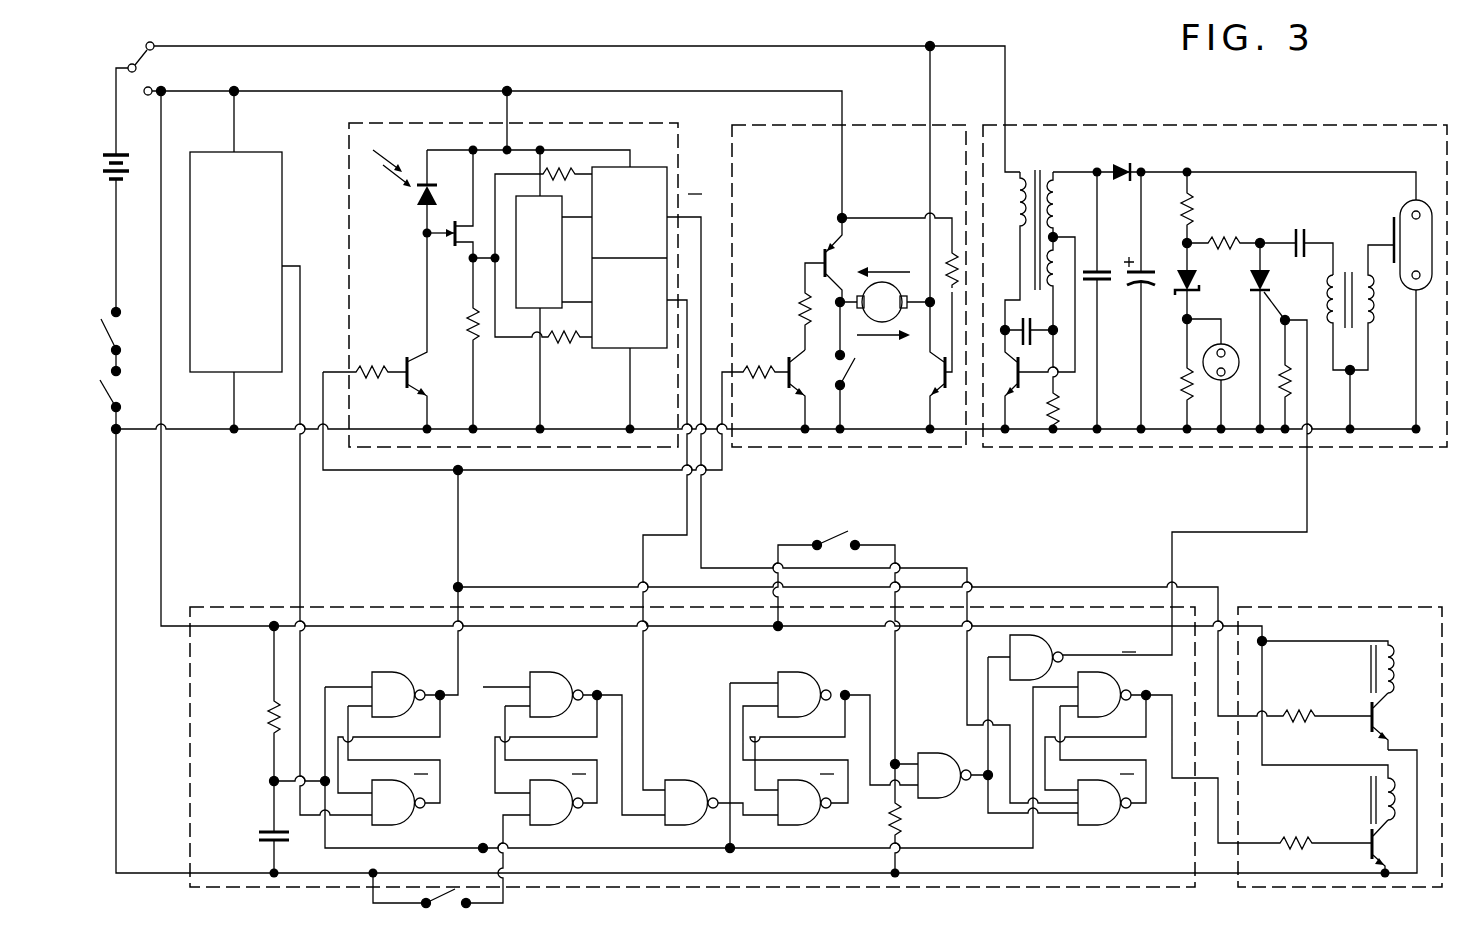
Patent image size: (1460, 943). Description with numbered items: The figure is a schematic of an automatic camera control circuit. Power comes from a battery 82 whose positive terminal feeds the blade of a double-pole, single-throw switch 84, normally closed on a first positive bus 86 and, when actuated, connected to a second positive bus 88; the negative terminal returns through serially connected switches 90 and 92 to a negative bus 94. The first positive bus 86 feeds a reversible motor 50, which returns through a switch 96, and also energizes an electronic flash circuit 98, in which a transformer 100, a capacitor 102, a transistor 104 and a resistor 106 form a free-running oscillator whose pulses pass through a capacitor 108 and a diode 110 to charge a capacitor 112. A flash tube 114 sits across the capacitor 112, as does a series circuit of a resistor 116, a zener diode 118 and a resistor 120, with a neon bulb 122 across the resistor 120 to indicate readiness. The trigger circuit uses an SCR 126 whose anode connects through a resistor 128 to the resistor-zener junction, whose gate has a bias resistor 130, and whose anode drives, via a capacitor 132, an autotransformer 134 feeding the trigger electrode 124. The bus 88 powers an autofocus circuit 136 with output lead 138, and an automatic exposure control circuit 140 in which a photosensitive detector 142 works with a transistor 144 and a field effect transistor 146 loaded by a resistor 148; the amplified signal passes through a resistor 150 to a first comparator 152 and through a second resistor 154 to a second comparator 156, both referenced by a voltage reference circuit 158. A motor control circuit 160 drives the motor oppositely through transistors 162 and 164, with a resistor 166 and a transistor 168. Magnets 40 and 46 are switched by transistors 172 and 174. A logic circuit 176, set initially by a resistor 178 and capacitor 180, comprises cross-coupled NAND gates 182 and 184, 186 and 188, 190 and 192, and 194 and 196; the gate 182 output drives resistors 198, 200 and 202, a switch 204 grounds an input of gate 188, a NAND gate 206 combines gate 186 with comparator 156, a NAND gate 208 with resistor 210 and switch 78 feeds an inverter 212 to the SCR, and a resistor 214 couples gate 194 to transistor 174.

The magnet 40 is at (1396, 675).
The magnet 46 is at (1368, 806).
The reversible motor 50 is at (849, 286).
The selectively operated switch 78 is at (856, 540).
The battery 82 is at (110, 152).
The double-pole, single-throw switch 84 is at (141, 58).
The first positive bus 86 is at (181, 47).
The second positive bus 88 is at (181, 91).
The first single-pole, single-throw switch 90 is at (110, 323).
The second single-pole, single-throw switch 92 is at (106, 378).
The negative bus 94 is at (112, 430).
The switch 96 is at (848, 383).
The electronic flash circuit 98 is at (1158, 127).
The transformer 100 is at (1037, 176).
The capacitor 102 is at (1040, 314).
The transistor 104 is at (1017, 376).
The resistor 106 is at (1048, 395).
The capacitor 108 is at (1100, 268).
The diode 110 is at (1124, 163).
The capacitor 112 is at (1134, 291).
The flash tube 114 is at (1405, 208).
The resistor 116 is at (1197, 205).
The zener diode 118 is at (1198, 287).
The resistor 120 is at (1178, 398).
The neon bulb 122 is at (1232, 382).
The trigger electrode 124 is at (1393, 268).
The SCR 126 is at (1270, 286).
The resistor 128 is at (1212, 238).
The bias resistor 130 is at (1297, 392).
The capacitor 132 is at (1309, 211).
The autotransformer 134 is at (1348, 268).
The autofocus circuit 136 is at (252, 152).
The output lead 138 is at (302, 300).
The automatic exposure control circuit 140 is at (384, 126).
The photosensitive detector 142 is at (430, 183).
The transistor 144 is at (418, 376).
The field effect transistor 146 is at (447, 228).
The resistor 148 is at (480, 342).
The resistor 150 is at (552, 175).
The first comparator 152 is at (622, 167).
The second resistor 154 is at (558, 352).
The second comparator 156 is at (633, 360).
The voltage reference circuit 158 is at (513, 305).
The motor control circuit 160 is at (868, 127).
The transistor 162 is at (822, 254).
The transistor 164 is at (940, 375).
The resistor 166 is at (800, 312).
The transistor 168 is at (796, 378).
The transistor 172 is at (1380, 720).
The transistor 174 is at (1374, 848).
The logic circuit 176 is at (328, 606).
The resistor 178 is at (266, 724).
The capacitor 180 is at (264, 845).
The NAND gate 182 is at (392, 672).
The NAND gate 184 is at (409, 817).
The NAND gate 186 is at (550, 672).
The NAND gate 188 is at (568, 818).
The NAND gate 190 is at (960, 281).
The NAND gate 192 is at (818, 821).
The NAND gate 194 is at (1140, 667).
The NAND gate 196 is at (1108, 828).
The resistor 198 is at (362, 370).
The resistor 200 is at (742, 380).
The resistor 202 is at (1290, 717).
The selectively operated switch 204 is at (457, 901).
The NAND gate 206 is at (678, 781).
The NAND gate 208 is at (930, 759).
The resistor 210 is at (903, 824).
The inverter 212 is at (1055, 645).
The resistor 214 is at (1303, 840).